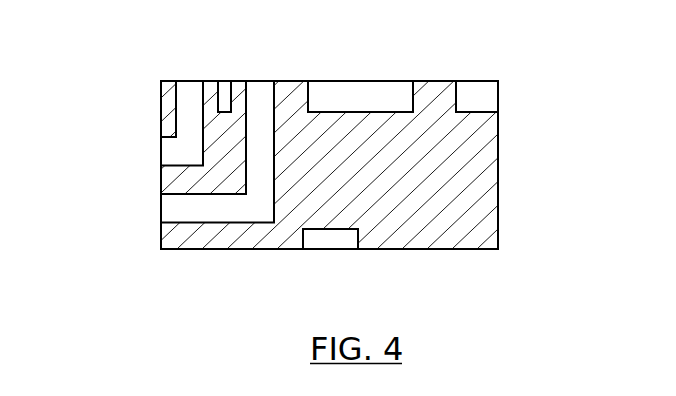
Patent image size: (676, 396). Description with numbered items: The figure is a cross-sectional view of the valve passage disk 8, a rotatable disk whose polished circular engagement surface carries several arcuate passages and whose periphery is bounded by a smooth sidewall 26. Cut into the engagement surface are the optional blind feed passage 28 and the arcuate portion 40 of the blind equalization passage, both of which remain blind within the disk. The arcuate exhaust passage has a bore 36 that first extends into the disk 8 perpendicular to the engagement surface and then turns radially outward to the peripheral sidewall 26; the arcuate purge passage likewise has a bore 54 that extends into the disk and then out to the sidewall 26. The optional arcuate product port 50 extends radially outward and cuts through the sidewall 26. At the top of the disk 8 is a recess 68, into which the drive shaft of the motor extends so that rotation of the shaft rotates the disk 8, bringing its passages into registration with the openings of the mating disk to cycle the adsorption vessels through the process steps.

The valve passage disk 8 is at (109, 91).
The sidewall 26 is at (498, 194).
The blind feed passage 28 is at (363, 71).
The bore 36 is at (207, 206).
The arcuate portion 40 is at (194, 72).
The arcuate product port 50 is at (503, 72).
The bore 54 is at (180, 149).
The recess 68 is at (307, 263).